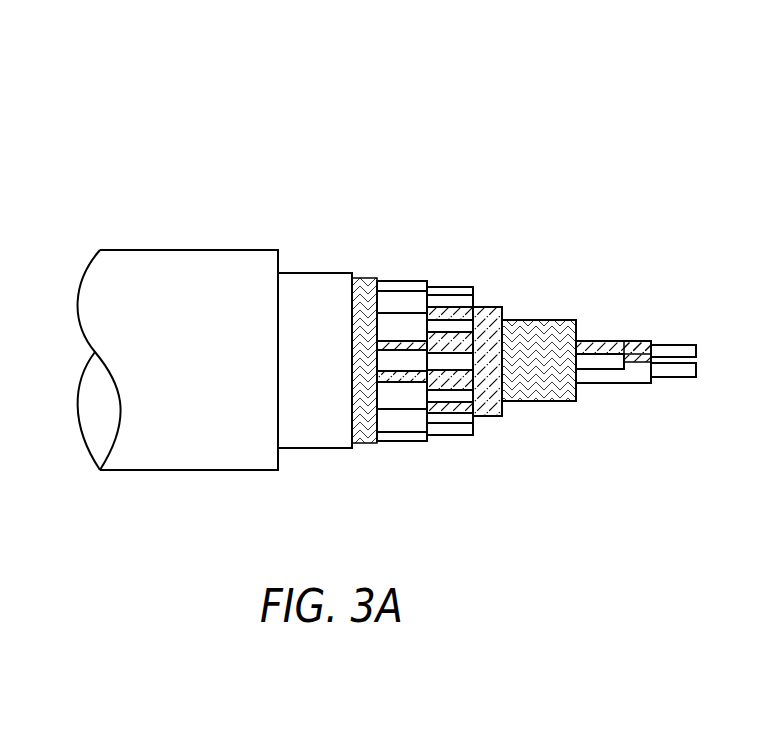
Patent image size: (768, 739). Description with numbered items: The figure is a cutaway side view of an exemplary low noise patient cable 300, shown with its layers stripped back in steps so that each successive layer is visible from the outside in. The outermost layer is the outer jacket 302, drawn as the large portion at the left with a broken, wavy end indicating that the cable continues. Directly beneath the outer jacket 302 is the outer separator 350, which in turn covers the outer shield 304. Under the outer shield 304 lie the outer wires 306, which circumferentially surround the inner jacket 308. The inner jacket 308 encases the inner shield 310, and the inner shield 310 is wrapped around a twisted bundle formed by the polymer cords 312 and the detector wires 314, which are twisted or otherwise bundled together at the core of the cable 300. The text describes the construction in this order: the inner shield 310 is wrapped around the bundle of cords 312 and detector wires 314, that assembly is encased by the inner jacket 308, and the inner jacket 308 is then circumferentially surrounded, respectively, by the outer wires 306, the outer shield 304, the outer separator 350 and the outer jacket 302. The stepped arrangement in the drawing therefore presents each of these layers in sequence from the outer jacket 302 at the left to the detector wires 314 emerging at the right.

The low noise patient cable 300 is at (387, 244).
The outer jacket 302 is at (188, 262).
The outer separator 350 is at (295, 272).
The outer shield 304 is at (361, 276).
The outer wires 306 is at (400, 297).
The inner jacket 308 is at (495, 305).
The inner shield 310 is at (552, 320).
The polymer cords 312 is at (605, 358).
The detector wires 314 is at (650, 383).